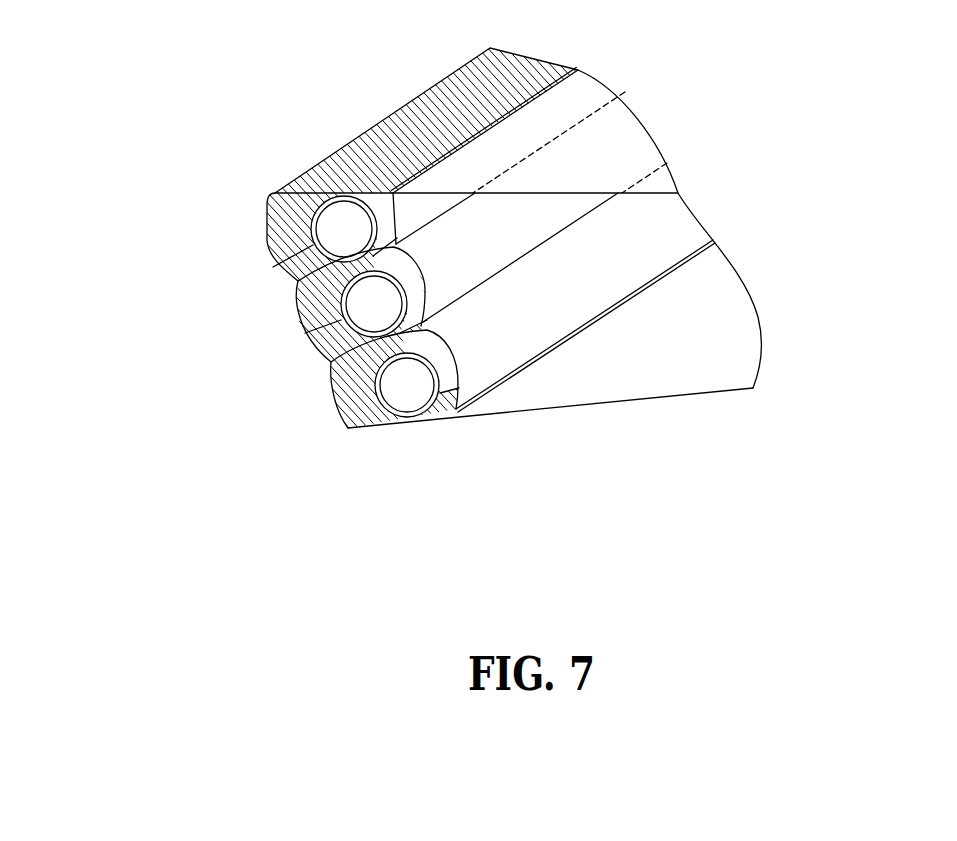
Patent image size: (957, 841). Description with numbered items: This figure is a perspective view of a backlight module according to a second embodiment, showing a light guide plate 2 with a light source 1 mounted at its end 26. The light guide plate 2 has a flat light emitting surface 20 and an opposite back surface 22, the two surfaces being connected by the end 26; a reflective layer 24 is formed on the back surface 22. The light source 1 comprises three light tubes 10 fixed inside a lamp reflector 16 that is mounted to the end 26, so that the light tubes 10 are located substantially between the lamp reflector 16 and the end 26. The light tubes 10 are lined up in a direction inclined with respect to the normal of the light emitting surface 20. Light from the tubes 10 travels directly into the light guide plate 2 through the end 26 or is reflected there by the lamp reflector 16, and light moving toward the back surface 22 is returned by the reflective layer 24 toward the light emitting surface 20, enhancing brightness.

The light source 1 is at (230, 440).
The light tube 10 is at (332, 245).
The lamp reflector 16 is at (270, 230).
The light emitting surface 20 is at (570, 193).
The back surface 22 is at (500, 415).
The reflective layer 24 is at (712, 302).
The end 26 is at (432, 202).
The light guide plate 2 is at (617, 415).